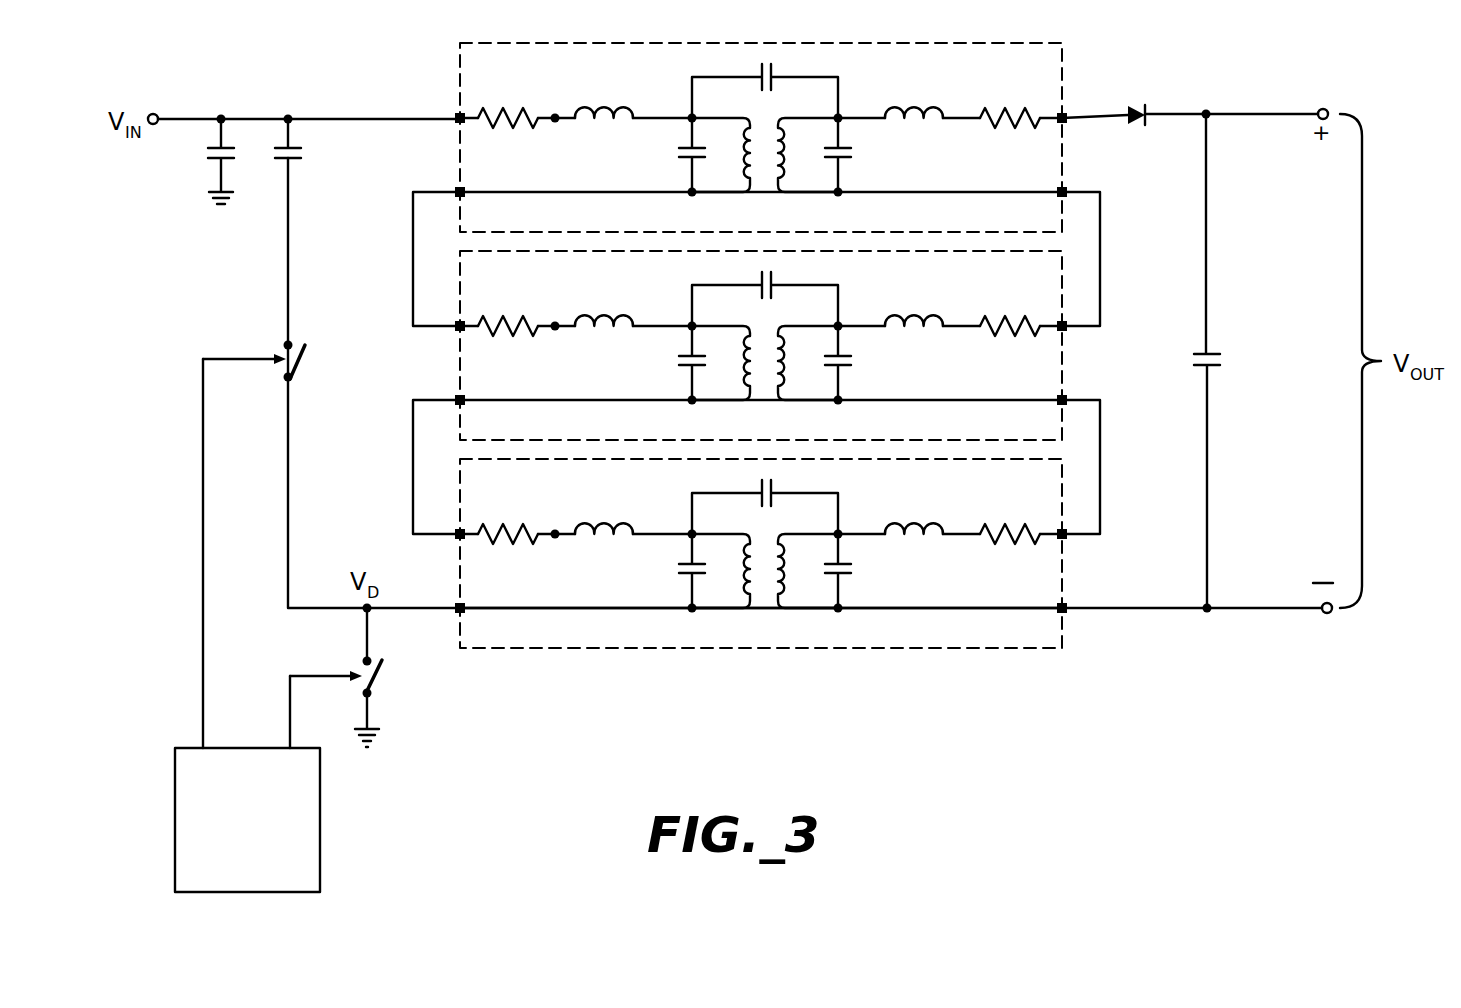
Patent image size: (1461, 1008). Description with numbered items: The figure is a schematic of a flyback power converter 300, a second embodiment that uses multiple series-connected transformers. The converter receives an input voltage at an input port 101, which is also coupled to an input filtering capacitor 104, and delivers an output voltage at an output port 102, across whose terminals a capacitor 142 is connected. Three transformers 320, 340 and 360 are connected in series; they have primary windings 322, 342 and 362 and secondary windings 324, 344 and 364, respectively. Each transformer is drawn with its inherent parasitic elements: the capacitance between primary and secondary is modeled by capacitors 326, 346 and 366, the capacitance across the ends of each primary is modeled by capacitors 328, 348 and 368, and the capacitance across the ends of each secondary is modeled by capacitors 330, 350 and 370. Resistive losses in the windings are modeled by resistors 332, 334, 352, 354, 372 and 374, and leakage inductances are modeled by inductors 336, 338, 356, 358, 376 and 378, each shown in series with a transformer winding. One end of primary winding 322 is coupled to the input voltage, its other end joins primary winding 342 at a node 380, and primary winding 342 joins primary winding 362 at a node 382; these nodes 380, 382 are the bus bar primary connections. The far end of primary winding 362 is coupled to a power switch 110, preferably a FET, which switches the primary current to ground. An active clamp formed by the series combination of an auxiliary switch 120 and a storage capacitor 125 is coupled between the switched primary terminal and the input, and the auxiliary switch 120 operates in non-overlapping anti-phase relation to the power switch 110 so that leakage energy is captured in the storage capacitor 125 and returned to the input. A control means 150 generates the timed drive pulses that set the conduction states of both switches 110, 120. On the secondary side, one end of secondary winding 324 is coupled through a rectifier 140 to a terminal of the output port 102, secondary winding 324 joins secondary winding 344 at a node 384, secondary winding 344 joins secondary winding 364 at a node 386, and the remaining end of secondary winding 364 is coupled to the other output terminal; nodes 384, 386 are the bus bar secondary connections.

The input port 101 is at (157, 113).
The output port 102 is at (1327, 614).
The input filtering capacitor 104 is at (214, 162).
The power switch 110 is at (380, 676).
The auxiliary switch 120 is at (303, 360).
The storage capacitor 125 is at (295, 162).
The rectifier 140 is at (1130, 106).
The capacitor 142 is at (1212, 352).
The control means 150 is at (320, 842).
The power converter 300 is at (988, 732).
The transformer 320 is at (455, 82).
The primary winding 322 is at (752, 185).
The secondary winding 324 is at (776, 128).
The capacitor 326 is at (758, 76).
The capacitor 328 is at (686, 160).
The capacitor 330 is at (851, 158).
The resistor 332 is at (510, 114).
The resistor 334 is at (1005, 112).
The inductor 336 is at (603, 113).
The inductor 338 is at (913, 112).
The transformer 340 is at (458, 372).
The primary winding 342 is at (752, 393).
The secondary winding 344 is at (776, 336).
The capacitor 346 is at (758, 284).
The capacitor 348 is at (686, 368).
The capacitor 350 is at (851, 366).
The resistor 352 is at (510, 322).
The resistor 354 is at (1005, 320).
The inductor 356 is at (603, 321).
The inductor 358 is at (913, 320).
The transformer 360 is at (528, 648).
The primary winding 362 is at (752, 601).
The secondary winding 364 is at (776, 544).
The capacitor 366 is at (758, 492).
The capacitor 368 is at (686, 576).
The capacitor 370 is at (851, 574).
The resistor 372 is at (510, 530).
The resistor 374 is at (1005, 528).
The inductor 376 is at (603, 529).
The inductor 378 is at (913, 528).
The node 380 is at (413, 262).
The node 382 is at (413, 470).
The node 384 is at (1100, 268).
The node 386 is at (1100, 476).